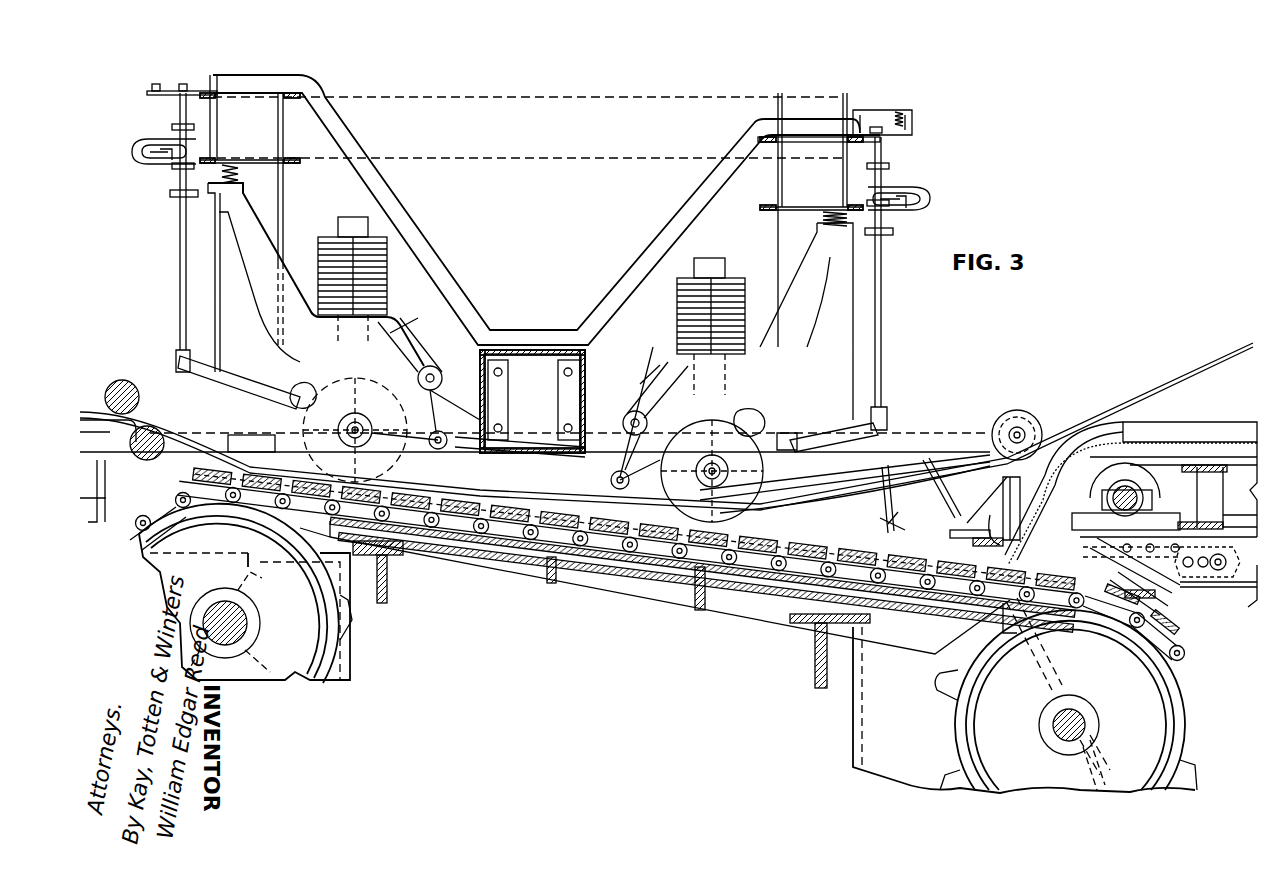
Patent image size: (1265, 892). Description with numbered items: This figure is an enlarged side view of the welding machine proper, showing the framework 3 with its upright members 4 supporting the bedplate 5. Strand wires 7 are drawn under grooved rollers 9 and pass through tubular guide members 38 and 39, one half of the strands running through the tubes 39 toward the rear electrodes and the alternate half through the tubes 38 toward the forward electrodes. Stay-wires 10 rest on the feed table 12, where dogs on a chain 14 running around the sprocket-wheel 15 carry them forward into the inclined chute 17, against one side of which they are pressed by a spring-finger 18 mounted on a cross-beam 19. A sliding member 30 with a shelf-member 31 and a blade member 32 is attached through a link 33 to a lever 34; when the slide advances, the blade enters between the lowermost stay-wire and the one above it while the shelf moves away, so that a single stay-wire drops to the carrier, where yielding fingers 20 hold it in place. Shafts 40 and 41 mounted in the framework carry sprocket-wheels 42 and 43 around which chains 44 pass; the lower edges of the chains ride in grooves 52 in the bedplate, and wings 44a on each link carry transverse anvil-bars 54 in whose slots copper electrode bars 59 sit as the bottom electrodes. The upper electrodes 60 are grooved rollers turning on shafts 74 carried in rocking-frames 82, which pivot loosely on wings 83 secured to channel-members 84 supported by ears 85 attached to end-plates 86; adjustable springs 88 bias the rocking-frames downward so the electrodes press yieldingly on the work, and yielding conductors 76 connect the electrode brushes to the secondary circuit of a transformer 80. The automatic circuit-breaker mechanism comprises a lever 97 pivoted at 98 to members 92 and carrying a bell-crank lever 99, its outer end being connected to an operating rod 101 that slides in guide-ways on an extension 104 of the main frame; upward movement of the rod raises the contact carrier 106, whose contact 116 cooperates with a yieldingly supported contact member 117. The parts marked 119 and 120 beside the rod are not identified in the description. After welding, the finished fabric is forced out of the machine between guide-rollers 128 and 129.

The framework 3 is at (852, 714).
The upright members 4 is at (270, 208).
The bedplate 5 is at (538, 567).
The strands 7 is at (160, 440).
The grooved rollers 9 is at (1017, 410).
The stay-wires 10 is at (118, 418).
The feed table 12 is at (1243, 438).
The chain 14 is at (1150, 440).
The sprocket-wheel 15 is at (1158, 492).
The inclined chute 17 is at (1113, 552).
The spring-finger 18 is at (1003, 482).
The cross-beam 19 is at (1005, 495).
The yielding fingers 20 is at (882, 522).
The slide member 30 is at (962, 530).
The shelf-member 31 is at (973, 542).
The blade member 32 is at (1065, 600).
The link 33 is at (1125, 572).
The lever 34 is at (1196, 575).
The tubular members 38 is at (905, 475).
The tubular members 39 is at (845, 484).
The shaft 40 is at (260, 625).
The shaft 41 is at (1050, 727).
The sprocket-wheel 42 is at (338, 632).
The sprocket-wheel 43 is at (1180, 727).
The chains 44 is at (612, 560).
The wings 44a is at (812, 575).
The grooves 52 is at (505, 540).
The anvil-bars 54 is at (672, 560).
The electrode bars 59 is at (648, 563).
The upper electrodes 60 is at (340, 395).
The shaft 74 is at (338, 430).
The yielding conductor 76 is at (296, 387).
The transformer 80 is at (375, 287).
The rocking-frame 82 is at (527, 386).
The wings 83 is at (450, 362).
The channel-members 84 is at (560, 418).
The ears 85 is at (560, 394).
The end-plates 86 is at (582, 372).
The adjustable springs 88 is at (245, 173).
The members 92 is at (485, 452).
The lever 97 is at (238, 380).
The pivot 98 is at (438, 449).
The bell-crank lever 99 is at (436, 430).
The operating rod 101 is at (178, 243).
The extension of the main frame 104 is at (147, 94).
The contact carrier 106 is at (878, 110).
The contact 116 is at (910, 118).
The contact member 117 is at (912, 132).
The clip pin 119 is at (160, 156).
The clip 120 is at (150, 147).
The guide-roller 128 is at (122, 380).
The guide-roller 129 is at (143, 462).